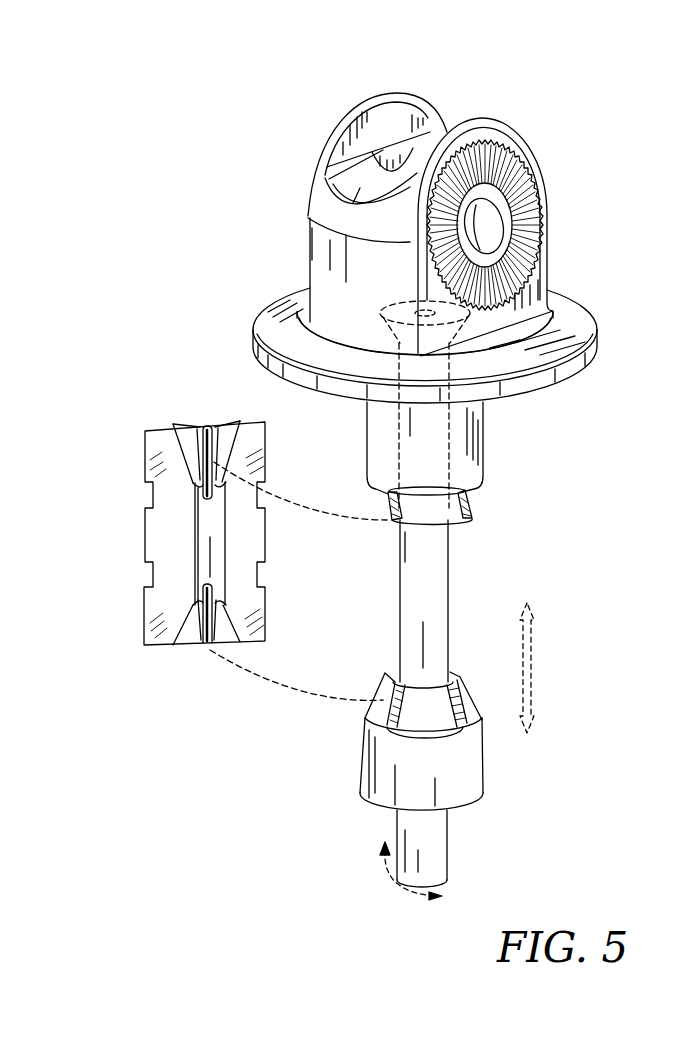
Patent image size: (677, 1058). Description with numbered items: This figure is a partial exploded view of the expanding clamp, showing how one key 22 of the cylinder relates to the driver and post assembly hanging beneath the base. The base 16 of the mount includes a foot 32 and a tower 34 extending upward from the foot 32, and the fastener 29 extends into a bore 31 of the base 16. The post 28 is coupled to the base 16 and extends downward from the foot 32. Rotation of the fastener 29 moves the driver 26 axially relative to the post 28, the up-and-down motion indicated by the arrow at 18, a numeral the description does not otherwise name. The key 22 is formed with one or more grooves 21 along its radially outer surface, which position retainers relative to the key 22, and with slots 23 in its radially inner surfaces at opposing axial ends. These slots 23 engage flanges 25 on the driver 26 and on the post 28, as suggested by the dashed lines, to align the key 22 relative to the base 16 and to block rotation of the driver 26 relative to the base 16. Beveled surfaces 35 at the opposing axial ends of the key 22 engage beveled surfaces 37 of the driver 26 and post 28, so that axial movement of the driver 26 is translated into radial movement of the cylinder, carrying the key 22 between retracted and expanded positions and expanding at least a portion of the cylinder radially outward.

The base 16 is at (280, 180).
The tower 34 is at (345, 112).
The bore 31 is at (405, 150).
The foot 32 is at (265, 307).
The key 22 is at (178, 402).
The beveled surfaces 35 is at (190, 450).
The slots 23 is at (224, 440).
The grooves 21 is at (140, 577).
The post 28 is at (490, 452).
The flanges 25 is at (382, 512).
The beveled surfaces 37 is at (428, 512).
The chuck assembly 18 is at (578, 516).
The driver 26 is at (490, 772).
The fastener 29 is at (453, 838).